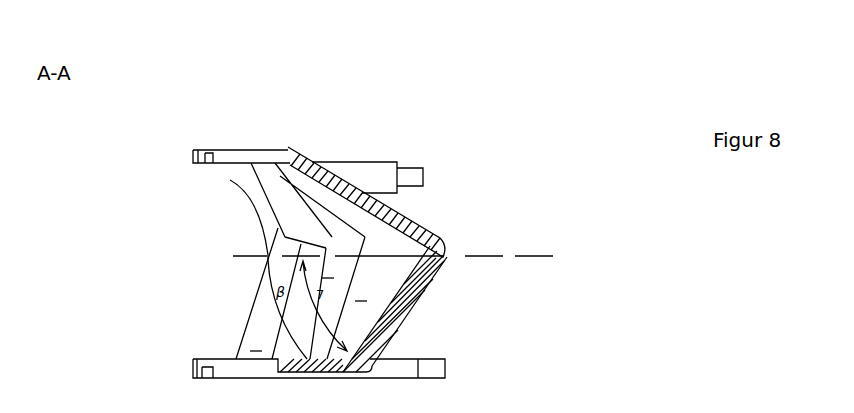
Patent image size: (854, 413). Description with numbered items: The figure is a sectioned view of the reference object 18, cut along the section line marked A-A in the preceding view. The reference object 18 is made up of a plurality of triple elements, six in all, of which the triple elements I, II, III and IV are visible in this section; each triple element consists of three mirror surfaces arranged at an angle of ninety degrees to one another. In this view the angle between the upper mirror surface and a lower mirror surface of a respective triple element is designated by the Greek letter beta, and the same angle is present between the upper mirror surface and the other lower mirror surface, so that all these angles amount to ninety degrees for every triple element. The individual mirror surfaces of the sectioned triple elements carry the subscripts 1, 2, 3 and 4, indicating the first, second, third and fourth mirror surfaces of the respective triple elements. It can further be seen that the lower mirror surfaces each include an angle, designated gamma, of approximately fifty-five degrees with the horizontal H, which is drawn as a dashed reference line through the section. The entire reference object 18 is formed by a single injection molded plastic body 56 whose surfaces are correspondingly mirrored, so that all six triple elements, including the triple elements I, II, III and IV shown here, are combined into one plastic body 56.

The first lamella 1 is at (268, 293).
The second lamella 2 is at (268, 173).
The hinge band 3 is at (372, 233).
The fourth lamella 4 is at (361, 293).
The reference object 18 is at (435, 108).
The injection molded plastic body 56 is at (252, 155).
The horizontal H is at (532, 256).
The triple element I is at (263, 198).
The triple element II is at (300, 199).
The triple element III is at (313, 333).
The triple element IV is at (353, 313).